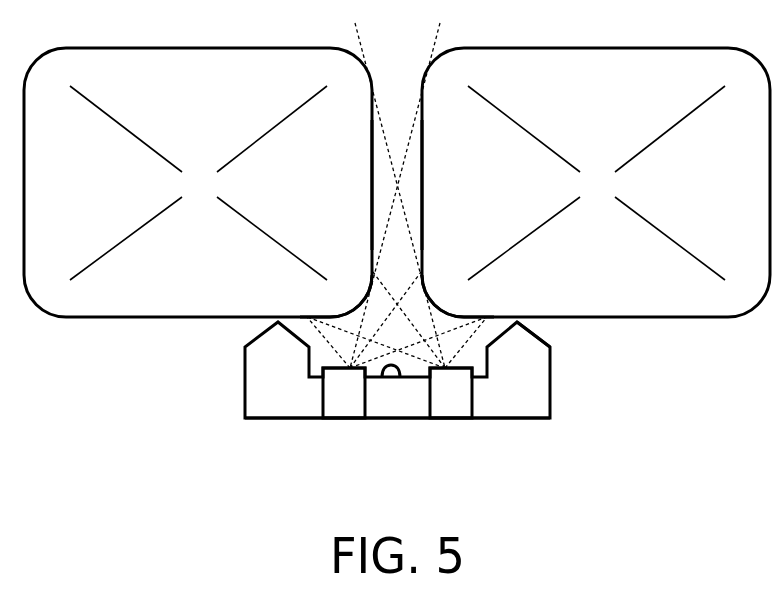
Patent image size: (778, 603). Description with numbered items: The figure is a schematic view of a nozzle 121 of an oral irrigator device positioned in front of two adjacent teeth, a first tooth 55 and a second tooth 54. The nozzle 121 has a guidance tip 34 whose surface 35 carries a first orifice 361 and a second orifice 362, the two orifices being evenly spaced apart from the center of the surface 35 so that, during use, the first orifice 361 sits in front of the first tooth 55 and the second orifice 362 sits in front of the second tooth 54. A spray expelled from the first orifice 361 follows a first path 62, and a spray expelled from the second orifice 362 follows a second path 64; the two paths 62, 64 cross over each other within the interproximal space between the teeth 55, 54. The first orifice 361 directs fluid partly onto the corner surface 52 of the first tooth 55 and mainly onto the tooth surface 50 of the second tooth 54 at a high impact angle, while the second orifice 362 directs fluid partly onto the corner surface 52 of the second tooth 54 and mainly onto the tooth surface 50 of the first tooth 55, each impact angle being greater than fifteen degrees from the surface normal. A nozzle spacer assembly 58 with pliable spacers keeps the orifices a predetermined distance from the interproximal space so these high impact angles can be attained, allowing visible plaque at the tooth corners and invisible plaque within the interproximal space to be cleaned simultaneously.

The first tooth 55 is at (212, 97).
The second tooth 54 is at (610, 97).
The tooth surface 50 is at (372, 185).
The tooth surface 52 is at (341, 314).
The guidance tip 34 is at (528, 405).
The first orifice 361 is at (348, 405).
The second orifice 362 is at (448, 405).
The surface 35 is at (394, 366).
The first path 62 is at (353, 357).
The second path 64 is at (468, 357).
The nozzle spacer assembly 58 is at (540, 328).
The nozzle 121 is at (588, 419).